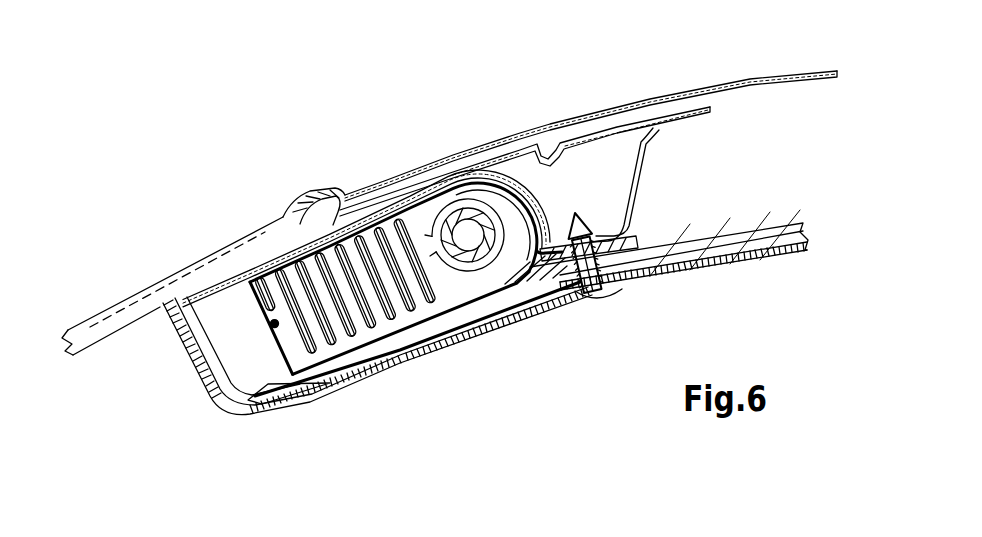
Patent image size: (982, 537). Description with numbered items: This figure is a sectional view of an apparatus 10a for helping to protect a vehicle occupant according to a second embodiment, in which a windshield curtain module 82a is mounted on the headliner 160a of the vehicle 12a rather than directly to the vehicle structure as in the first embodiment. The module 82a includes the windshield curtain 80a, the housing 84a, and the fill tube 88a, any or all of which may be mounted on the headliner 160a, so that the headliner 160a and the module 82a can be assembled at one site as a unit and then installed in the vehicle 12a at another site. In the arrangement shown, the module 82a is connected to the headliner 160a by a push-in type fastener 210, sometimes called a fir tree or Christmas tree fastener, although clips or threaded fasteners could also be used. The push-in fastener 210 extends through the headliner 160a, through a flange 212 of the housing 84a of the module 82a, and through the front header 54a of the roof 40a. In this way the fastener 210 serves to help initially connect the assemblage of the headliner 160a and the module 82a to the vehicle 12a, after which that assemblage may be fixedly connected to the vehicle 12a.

The apparatus 10a is at (453, 397).
The vehicle 12a is at (274, 182).
The roof 40a is at (504, 128).
The front header 54a is at (607, 128).
The windshield curtain 80a is at (410, 207).
The windshield curtain module 82a is at (374, 405).
The housing 84a is at (479, 310).
The fill tube 88a is at (468, 213).
The headliner 160a is at (516, 307).
The push-in fastener 210 is at (603, 291).
The flange 212 is at (637, 238).